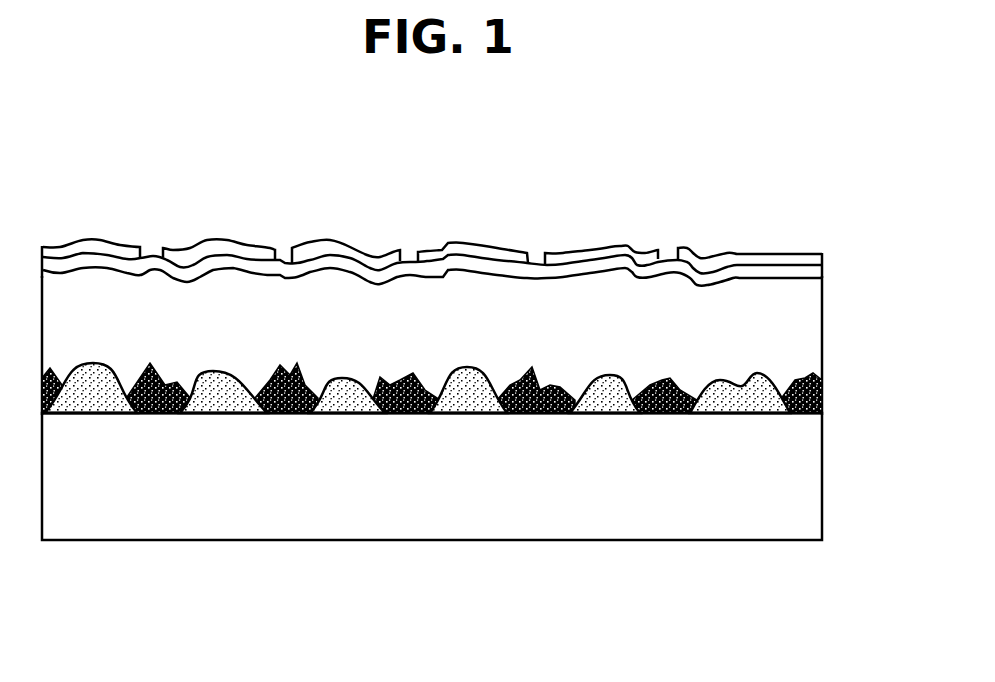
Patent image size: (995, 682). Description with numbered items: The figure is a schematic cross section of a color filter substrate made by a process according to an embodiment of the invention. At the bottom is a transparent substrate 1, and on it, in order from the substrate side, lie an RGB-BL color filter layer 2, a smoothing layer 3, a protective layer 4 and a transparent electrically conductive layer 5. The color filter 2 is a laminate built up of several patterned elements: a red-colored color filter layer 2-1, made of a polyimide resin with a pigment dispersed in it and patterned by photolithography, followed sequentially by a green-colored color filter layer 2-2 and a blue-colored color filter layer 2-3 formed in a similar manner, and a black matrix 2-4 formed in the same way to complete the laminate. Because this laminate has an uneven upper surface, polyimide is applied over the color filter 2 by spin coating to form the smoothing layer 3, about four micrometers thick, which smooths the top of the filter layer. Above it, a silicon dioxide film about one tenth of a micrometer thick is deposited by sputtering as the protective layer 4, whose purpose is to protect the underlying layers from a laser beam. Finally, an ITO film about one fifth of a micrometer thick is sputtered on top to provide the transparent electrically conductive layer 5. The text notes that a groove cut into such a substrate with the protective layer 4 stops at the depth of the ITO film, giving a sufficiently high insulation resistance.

The transparent substrate 1 is at (788, 480).
The RGB-BL color filter layer 2 is at (472, 496).
The red-colored color filter layer 2-1 is at (102, 414).
The green-colored color filter layer 2-2 is at (222, 414).
The blue-colored color filter layer 2-3 is at (358, 414).
The black matrix 2-4 is at (665, 417).
The smoothing layer 3 is at (802, 320).
The protective layer 4 is at (750, 262).
The transparent electrically conductive layer 5 is at (625, 243).